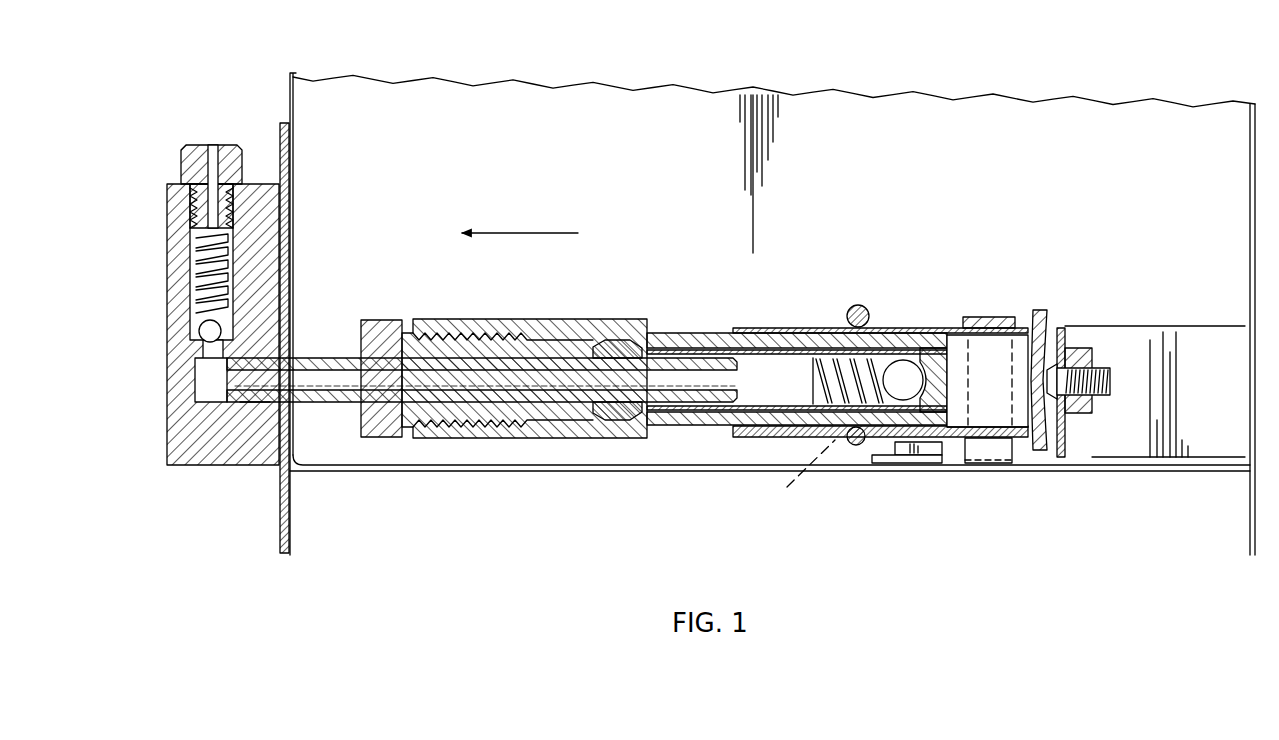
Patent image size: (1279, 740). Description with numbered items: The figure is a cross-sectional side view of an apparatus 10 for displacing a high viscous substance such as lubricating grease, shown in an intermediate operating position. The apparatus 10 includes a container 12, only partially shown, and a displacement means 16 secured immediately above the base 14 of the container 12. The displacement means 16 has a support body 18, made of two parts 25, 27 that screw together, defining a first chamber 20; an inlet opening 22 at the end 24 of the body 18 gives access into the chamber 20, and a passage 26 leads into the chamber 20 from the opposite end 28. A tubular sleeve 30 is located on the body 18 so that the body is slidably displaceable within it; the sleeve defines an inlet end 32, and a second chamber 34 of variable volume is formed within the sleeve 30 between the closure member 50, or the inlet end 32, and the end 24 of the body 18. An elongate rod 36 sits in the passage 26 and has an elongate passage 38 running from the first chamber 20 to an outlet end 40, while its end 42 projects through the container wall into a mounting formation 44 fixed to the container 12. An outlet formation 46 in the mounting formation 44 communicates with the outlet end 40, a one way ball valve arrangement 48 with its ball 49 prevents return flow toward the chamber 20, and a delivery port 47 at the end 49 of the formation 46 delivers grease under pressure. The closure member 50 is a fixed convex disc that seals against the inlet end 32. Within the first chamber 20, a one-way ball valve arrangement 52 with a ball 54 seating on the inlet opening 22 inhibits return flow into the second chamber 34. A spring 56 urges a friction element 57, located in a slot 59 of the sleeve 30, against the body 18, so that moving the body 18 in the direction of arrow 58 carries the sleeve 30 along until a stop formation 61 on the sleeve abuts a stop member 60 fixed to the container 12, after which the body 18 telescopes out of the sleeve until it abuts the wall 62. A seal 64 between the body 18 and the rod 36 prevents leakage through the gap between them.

The apparatus 10 is at (670, 304).
The container 12 is at (296, 86).
The base 14 is at (695, 470).
The displacement means 16 is at (690, 305).
The support body 18 is at (640, 323).
The first chamber 20 is at (748, 380).
The inlet opening 22 is at (1040, 330).
The end of the body 24 is at (955, 340).
The first part of the body 25 is at (703, 340).
The passage 26 is at (380, 367).
The second part of the body 27 is at (440, 335).
The end of the body 28 is at (363, 338).
The tubular sleeve 30 is at (920, 340).
The inlet end of the sleeve 32 is at (958, 377).
The second chamber 34 is at (988, 417).
The elongate rod 36 is at (575, 360).
The elongate passage 38 is at (502, 378).
The outlet end 40 is at (212, 362).
The end of the rod 42 is at (245, 402).
The mounting formation 44 is at (268, 245).
The outlet formation 46 is at (217, 386).
The delivery port 47 is at (192, 204).
The one way ball valve arrangement 48 is at (190, 318).
The ball 49 is at (262, 178).
The closure member 50 is at (1060, 455).
The one-way ball valve arrangement 52 is at (872, 412).
The ball 54 is at (906, 402).
The spring 56 is at (865, 312).
The friction element 57 is at (853, 442).
The arrow 58 is at (525, 233).
The slot 59 is at (790, 476).
The stop member 60 is at (930, 450).
The stop formation 61 is at (1003, 399).
The wall 62 is at (290, 443).
The seal 64 is at (610, 420).